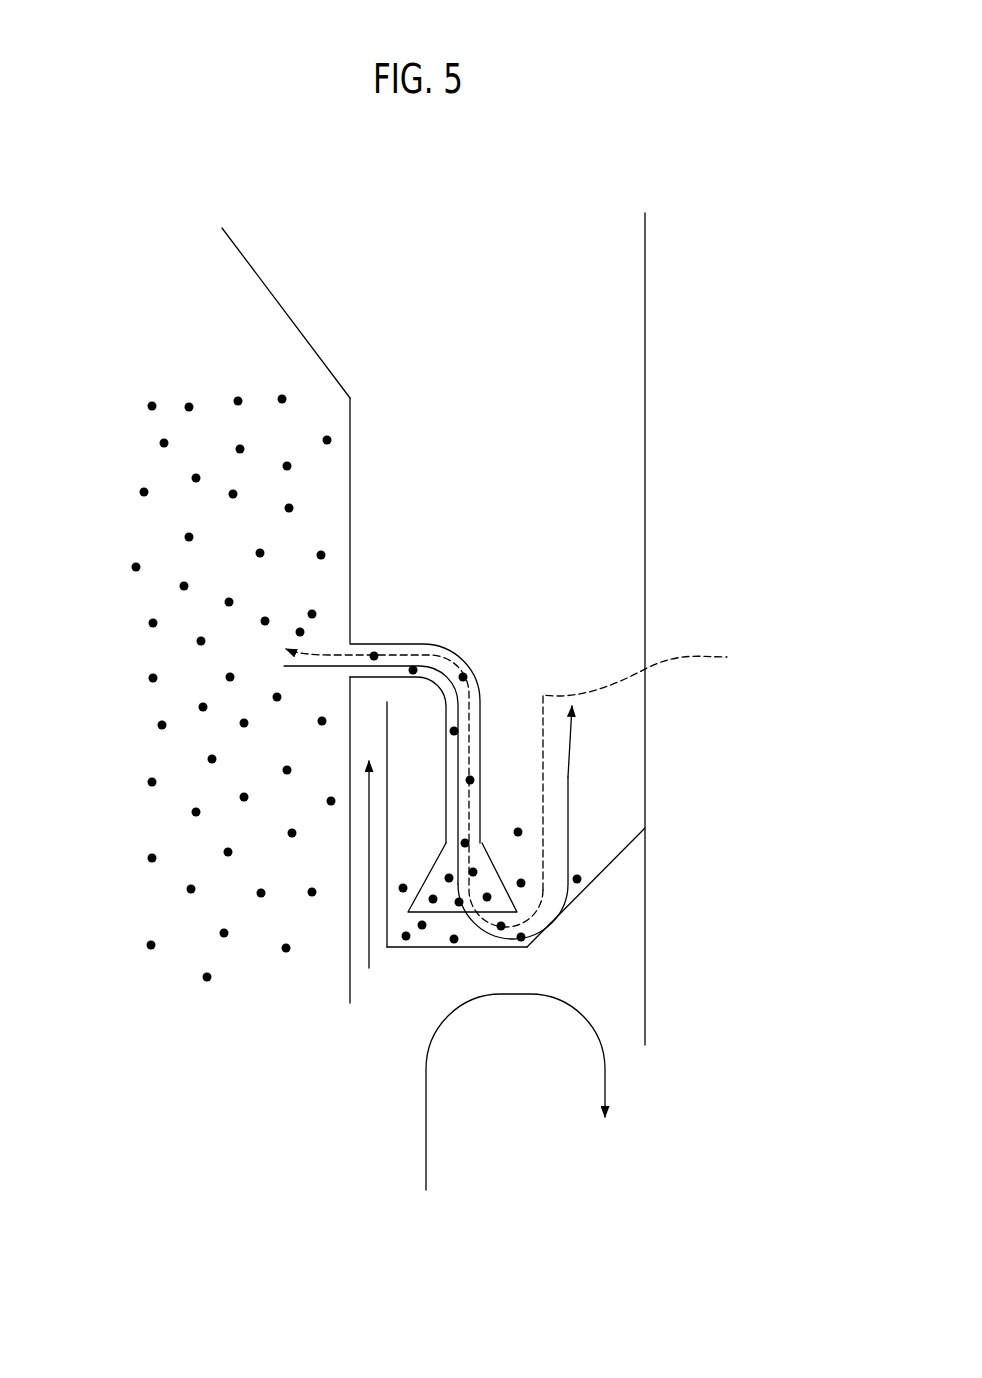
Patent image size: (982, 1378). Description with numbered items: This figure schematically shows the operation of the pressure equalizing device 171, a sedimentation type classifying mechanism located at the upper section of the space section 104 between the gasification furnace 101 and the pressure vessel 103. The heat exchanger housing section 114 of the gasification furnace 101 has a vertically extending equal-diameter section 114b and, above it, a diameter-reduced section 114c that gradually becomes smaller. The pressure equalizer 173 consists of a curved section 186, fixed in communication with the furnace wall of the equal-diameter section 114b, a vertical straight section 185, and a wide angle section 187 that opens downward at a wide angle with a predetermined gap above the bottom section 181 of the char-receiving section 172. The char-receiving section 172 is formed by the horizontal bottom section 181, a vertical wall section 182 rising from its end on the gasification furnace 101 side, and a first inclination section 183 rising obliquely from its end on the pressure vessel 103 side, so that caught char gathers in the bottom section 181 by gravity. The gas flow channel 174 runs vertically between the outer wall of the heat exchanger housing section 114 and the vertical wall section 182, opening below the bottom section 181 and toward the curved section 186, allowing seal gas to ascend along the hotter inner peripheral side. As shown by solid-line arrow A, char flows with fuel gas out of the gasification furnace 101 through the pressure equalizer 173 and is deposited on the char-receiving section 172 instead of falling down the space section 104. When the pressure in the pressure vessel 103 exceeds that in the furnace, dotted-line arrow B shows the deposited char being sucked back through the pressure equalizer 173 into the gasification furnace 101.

The heat exchanger housing section 114 is at (335, 671).
The diameter-reduced section 114c is at (274, 296).
The equal-diameter section 114b is at (352, 433).
The gasification furnace 101 is at (354, 984).
The pressure vessel 103 is at (648, 457).
The space section 104 is at (517, 471).
The pressure equalizer 173 is at (420, 641).
The curved section 186 is at (378, 643).
The dotted-line arrow B is at (645, 765).
The pressure equalizing device 171 is at (619, 642).
The straight section 185 is at (480, 751).
The solid-line arrow A is at (571, 777).
The vertical wall section 182 is at (385, 753).
The gas flow channel 174 is at (365, 827).
The wide angle section 187 is at (500, 877).
The first inclination section 183 is at (603, 872).
The char-receiving section 172 is at (543, 934).
The bottom section 181 is at (413, 947).